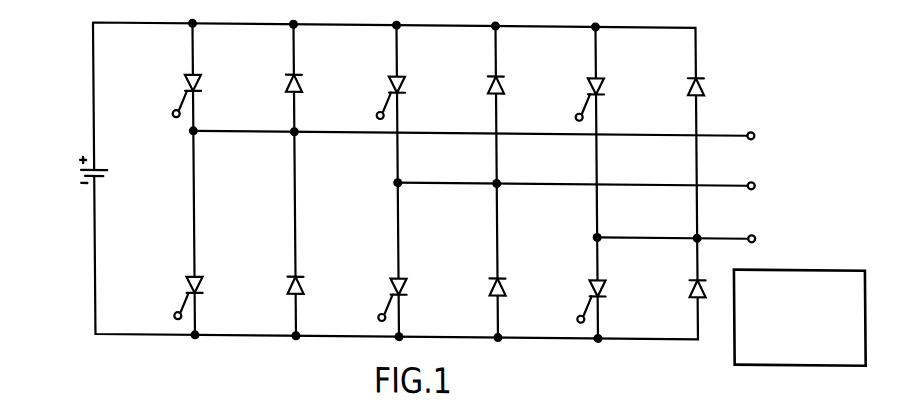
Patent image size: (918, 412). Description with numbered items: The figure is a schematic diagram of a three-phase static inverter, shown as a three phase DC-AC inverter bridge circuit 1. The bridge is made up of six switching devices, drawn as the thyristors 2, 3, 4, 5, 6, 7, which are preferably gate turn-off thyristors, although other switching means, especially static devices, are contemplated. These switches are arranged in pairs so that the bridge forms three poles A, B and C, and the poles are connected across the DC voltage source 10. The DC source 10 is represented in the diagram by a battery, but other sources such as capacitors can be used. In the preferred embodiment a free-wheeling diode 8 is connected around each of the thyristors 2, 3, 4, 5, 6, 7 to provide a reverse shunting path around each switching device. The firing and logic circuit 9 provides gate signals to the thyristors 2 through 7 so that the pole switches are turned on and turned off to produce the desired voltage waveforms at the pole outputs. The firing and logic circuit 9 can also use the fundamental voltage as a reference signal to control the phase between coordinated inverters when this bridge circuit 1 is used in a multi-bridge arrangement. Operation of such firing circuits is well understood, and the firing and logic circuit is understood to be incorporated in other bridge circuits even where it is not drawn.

The three phase DC-AC inverter bridge circuit 1 is at (706, 38).
The thyristor 2 is at (184, 82).
The thyristor 3 is at (184, 284).
The thyristor 4 is at (388, 81).
The thyristor 5 is at (388, 283).
The thyristor 6 is at (587, 80).
The thyristor 7 is at (587, 283).
The free-wheeling diode 8 is at (285, 81).
The firing and logic circuit 9 is at (797, 264).
The DC voltage source 10 is at (75, 174).